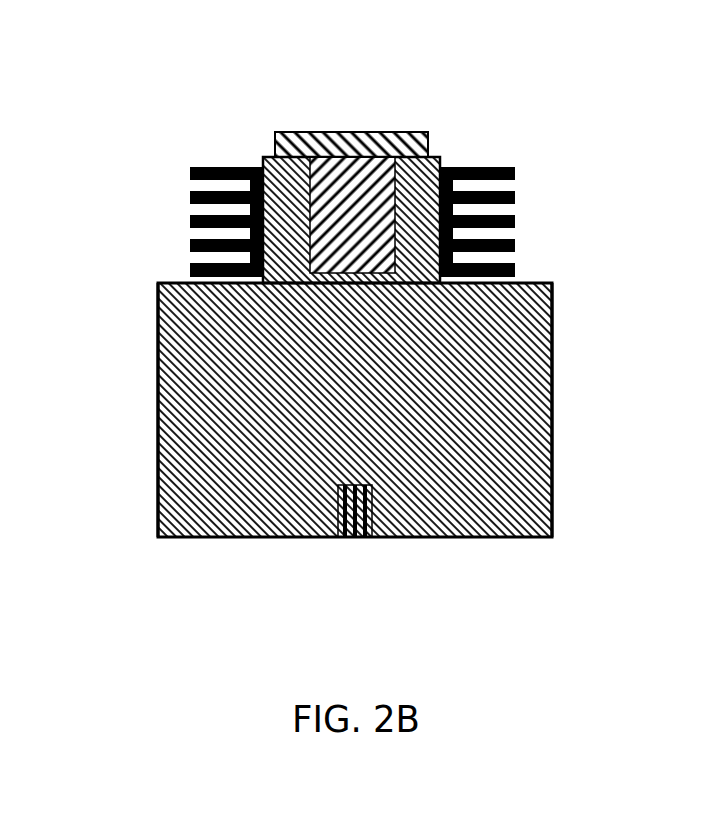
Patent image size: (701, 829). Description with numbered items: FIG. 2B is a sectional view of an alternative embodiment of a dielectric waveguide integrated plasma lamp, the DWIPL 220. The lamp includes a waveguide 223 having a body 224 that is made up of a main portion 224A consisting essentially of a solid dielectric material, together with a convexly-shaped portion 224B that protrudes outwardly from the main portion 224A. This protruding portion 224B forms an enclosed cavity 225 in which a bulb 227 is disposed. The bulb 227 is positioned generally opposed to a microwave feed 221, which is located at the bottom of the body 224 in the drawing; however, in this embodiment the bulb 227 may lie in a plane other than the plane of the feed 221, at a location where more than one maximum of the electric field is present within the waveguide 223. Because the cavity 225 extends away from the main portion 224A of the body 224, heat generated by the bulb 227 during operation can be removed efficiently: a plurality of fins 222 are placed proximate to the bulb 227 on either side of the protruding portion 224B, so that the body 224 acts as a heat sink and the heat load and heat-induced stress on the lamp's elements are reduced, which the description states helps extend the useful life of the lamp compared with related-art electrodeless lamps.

The DWIPL 220 is at (369, 324).
The microwave feed 221 is at (350, 543).
The fins 222 is at (181, 160).
The waveguide 223 is at (572, 331).
The body 224 is at (355, 443).
The main portion 224A is at (148, 390).
The convexly-shaped portion 224B is at (346, 168).
The cavity 225 is at (268, 163).
The bulb 227 is at (345, 117).